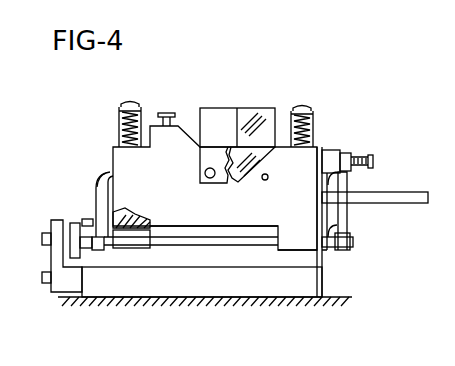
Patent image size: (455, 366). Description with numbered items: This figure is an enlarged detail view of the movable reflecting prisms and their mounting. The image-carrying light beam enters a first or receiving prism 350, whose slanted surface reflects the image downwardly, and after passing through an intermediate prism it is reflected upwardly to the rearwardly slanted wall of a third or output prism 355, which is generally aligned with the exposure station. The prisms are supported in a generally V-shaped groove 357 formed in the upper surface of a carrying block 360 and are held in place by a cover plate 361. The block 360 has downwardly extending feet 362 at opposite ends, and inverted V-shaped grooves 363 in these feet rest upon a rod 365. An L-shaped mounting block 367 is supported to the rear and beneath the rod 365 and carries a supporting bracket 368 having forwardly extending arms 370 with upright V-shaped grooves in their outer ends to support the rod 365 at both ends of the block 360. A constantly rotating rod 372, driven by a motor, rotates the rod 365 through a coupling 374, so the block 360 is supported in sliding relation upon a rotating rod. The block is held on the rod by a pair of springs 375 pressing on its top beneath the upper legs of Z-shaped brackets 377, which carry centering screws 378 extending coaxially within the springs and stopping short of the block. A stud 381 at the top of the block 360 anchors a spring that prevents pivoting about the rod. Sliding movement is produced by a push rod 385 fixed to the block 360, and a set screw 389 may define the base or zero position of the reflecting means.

The first or receiving prism 350 is at (219, 106).
The third or output prism 355 is at (261, 107).
The V-shaped groove 357 is at (265, 162).
The carrying block 360 is at (266, 215).
The cover plate 361 is at (205, 158).
The feet 362 is at (300, 247).
The inverted V-shaped grooves 363 is at (125, 246).
The rod 365 is at (207, 242).
The L-shaped mounting block 367 is at (238, 299).
The supporting bracket 368 is at (109, 171).
The forwardly extending arms 370 is at (97, 210).
The constantly rotating rod 372 is at (43, 247).
The coupling 374 is at (76, 258).
The springs 375 is at (120, 127).
The Z-shaped brackets 377 is at (119, 117).
The centering screws 378 is at (129, 103).
The stud 381 is at (167, 114).
The push rod 385 is at (410, 192).
The set screw 389 is at (377, 160).